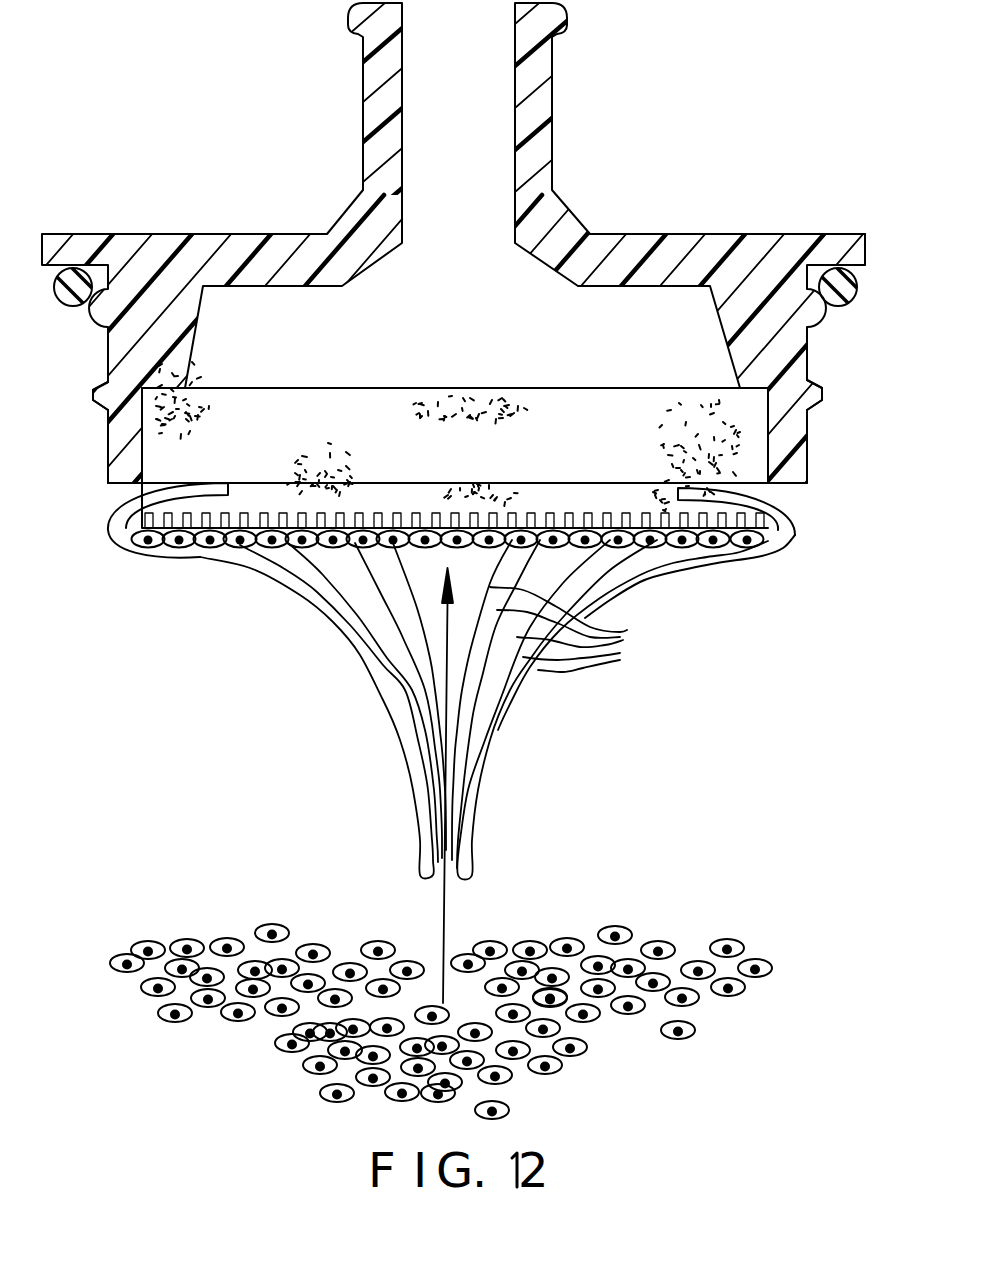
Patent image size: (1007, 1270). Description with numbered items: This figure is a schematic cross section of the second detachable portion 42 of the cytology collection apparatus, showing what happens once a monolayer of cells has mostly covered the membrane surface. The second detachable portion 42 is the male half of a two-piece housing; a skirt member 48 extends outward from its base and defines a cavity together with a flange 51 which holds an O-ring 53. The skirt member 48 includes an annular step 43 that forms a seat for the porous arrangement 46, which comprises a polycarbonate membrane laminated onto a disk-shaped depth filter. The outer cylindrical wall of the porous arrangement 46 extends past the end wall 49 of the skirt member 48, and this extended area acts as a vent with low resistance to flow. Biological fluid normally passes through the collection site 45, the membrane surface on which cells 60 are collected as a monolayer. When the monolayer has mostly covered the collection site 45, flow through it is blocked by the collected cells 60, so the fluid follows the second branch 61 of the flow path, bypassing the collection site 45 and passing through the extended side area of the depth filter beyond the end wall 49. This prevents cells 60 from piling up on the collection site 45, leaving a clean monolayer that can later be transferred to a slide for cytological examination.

The second detachable portion 42 is at (553, 100).
The flange 51 is at (868, 252).
The O-ring 53 is at (856, 294).
The annular step 43 is at (775, 392).
The skirt member 48 is at (812, 432).
The end wall 49 is at (795, 487).
The collection site 45 is at (783, 537).
The porous arrangement 46 is at (133, 497).
The second branch 61 is at (253, 571).
The cells 60 is at (628, 925).